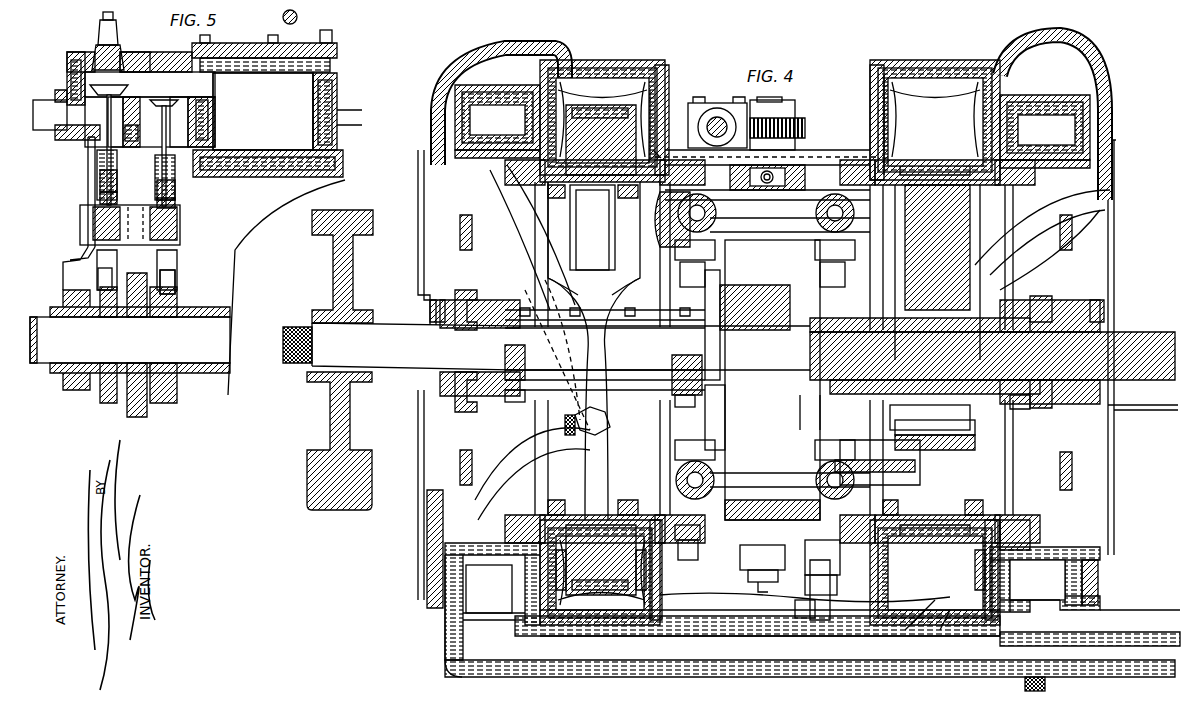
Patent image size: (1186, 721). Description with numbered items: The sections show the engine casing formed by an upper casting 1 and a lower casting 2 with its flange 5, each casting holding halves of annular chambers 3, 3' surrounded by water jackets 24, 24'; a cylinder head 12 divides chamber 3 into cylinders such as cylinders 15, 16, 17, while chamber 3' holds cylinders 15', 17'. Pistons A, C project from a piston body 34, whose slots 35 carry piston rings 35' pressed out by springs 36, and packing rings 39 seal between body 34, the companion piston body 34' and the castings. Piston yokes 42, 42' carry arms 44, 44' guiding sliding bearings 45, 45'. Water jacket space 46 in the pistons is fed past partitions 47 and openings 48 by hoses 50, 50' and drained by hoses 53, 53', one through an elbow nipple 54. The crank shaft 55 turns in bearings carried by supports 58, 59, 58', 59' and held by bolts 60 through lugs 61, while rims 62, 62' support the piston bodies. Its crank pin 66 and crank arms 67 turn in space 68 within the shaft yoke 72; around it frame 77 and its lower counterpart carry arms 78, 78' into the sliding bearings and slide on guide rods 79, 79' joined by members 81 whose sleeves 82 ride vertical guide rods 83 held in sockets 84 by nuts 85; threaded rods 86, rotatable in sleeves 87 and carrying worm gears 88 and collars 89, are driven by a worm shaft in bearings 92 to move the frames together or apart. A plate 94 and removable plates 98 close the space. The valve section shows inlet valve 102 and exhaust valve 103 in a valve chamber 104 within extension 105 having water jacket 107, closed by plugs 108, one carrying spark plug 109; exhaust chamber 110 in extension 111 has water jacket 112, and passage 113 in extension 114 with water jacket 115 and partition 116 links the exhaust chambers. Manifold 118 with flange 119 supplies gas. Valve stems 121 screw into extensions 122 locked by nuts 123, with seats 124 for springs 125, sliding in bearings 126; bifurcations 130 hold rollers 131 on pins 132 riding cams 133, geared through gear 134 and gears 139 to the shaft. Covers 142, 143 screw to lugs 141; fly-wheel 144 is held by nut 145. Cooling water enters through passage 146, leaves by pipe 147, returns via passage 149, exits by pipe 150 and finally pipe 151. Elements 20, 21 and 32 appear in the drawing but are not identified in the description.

In FIG. 5, the upper casting 1 is at (332, 70).
In FIG. 4, the upper casting 1 is at (872, 80).
In FIG. 4, the lower casting 2 is at (1015, 534).
In FIG. 5, the annular chamber 3 is at (263, 111).
In FIG. 4, the annular chamber 3 is at (600, 345).
In FIG. 4, the annular chamber 3' is at (935, 335).
In FIG. 4, the flange 5 is at (939, 630).
In FIG. 5, the cylinder head 12 is at (226, 45).
In FIG. 4, the cylinder 15 is at (602, 110).
In FIG. 4, the cylinder 15' is at (935, 101).
In FIG. 5, the cylinder 16 is at (263, 111).
In FIG. 4, the cylinder 17 is at (770, 603).
In FIG. 4, the cylinder 17' is at (1030, 593).
In FIG. 5, the bolt 20 is at (297, 19).
In FIG. 5, the nut 21 is at (328, 34).
In FIG. 5, the water jacket 24 is at (337, 111).
In FIG. 4, the water jacket 24 is at (668, 342).
In FIG. 4, the water jacket 24' is at (934, 339).
In FIG. 4, the shaft 32 is at (998, 356).
In FIG. 4, the piston body 34 is at (602, 351).
In FIG. 4, the piston body 34' is at (937, 351).
In FIG. 4, the slots 35 is at (762, 346).
In FIG. 4, the piston rings 35' is at (753, 355).
In FIG. 4, the springs 36 is at (661, 117).
In FIG. 4, the packing rings 39 is at (516, 166).
In FIG. 4, the piston yoke 42 is at (594, 351).
In FIG. 4, the piston yoke 42' is at (937, 272).
In FIG. 4, the arms 44 is at (593, 344).
In FIG. 4, the arms 44' is at (933, 512).
In FIG. 4, the sliding bearing 45 is at (592, 227).
In FIG. 4, the sliding bearing 45' is at (935, 435).
In FIG. 5, the water jacket space 46 is at (244, 170).
In FIG. 4, the partitions 47 is at (784, 571).
In FIG. 4, the openings 48 is at (916, 625).
In FIG. 4, the hose 50 is at (532, 237).
In FIG. 4, the hose 50' is at (1042, 232).
In FIG. 4, the hose 53 is at (532, 474).
In FIG. 4, the hose 53' is at (995, 320).
In FIG. 4, the elbow nipple 54 is at (587, 421).
In FIG. 4, the crank shaft 55 is at (561, 346).
In FIG. 4, the bearing support 58 is at (525, 362).
In FIG. 4, the bearing support 58' is at (1026, 404).
In FIG. 4, the bearing support 59 is at (605, 375).
In FIG. 4, the bearing support 59' is at (799, 412).
In FIG. 4, the bolts 60 is at (605, 318).
In FIG. 4, the lugs 61 is at (504, 400).
In FIG. 4, the rims 62 is at (596, 348).
In FIG. 4, the rims 62' is at (941, 348).
In FIG. 4, the crank pin 66 is at (755, 307).
In FIG. 4, the crank arms 67 is at (712, 325).
In FIG. 4, the space 68 is at (714, 417).
In FIG. 4, the shaft yoke 72 is at (772, 380).
In FIG. 4, the frame 77 is at (765, 344).
In FIG. 4, the arm 78 is at (663, 219).
In FIG. 4, the arm 78' is at (877, 462).
In FIG. 4, the horizontal guide rods 79 is at (790, 218).
In FIG. 4, the horizontal guide rods 79' is at (790, 481).
In FIG. 4, the members 81 is at (815, 550).
In FIG. 4, the sleeves 82 is at (765, 350).
In FIG. 4, the vertical guide rods 83 is at (762, 274).
In FIG. 4, the sockets 84 is at (687, 528).
In FIG. 4, the nuts 85 is at (691, 549).
In FIG. 4, the vertical rods 86 is at (770, 586).
In FIG. 4, the sleeves 87 is at (762, 333).
In FIG. 4, the worm gears 88 is at (785, 125).
In FIG. 4, the collars 89 is at (763, 571).
In FIG. 4, the bearings 92 is at (686, 135).
In FIG. 4, the plate 94 is at (805, 588).
In FIG. 4, the removable plates 98 is at (682, 168).
In FIG. 5, the inlet valves 102 is at (109, 138).
In FIG. 5, the exhaust valves 103 is at (182, 98).
In FIG. 5, the valve chamber 104 is at (150, 109).
In FIG. 5, the extensions 105 is at (131, 55).
In FIG. 5, the water jackets 107 is at (66, 75).
In FIG. 5, the threaded plugs 108 is at (90, 56).
In FIG. 5, the spark plug 109 is at (102, 32).
In FIG. 5, the exhaust chamber 110 is at (143, 122).
In FIG. 4, the exhaust chamber 110 is at (770, 359).
In FIG. 4, the extensions 111 is at (772, 369).
In FIG. 5, the water jackets 112 is at (209, 126).
In FIG. 4, the water jackets 112 is at (471, 597).
In FIG. 4, the passage 113 is at (770, 645).
In FIG. 4, the extension 114 is at (450, 649).
In FIG. 4, the water jacket 115 is at (757, 641).
In FIG. 4, the partition 116 is at (850, 646).
In FIG. 5, the gas manifold 118 is at (66, 120).
In FIG. 5, the flanges 119 is at (64, 92).
In FIG. 5, the valve stems 121 is at (108, 114).
In FIG. 5, the extensions 122 is at (107, 257).
In FIG. 5, the lock nuts 123 is at (115, 180).
In FIG. 5, the seats 124 is at (116, 196).
In FIG. 5, the valve springs 125 is at (152, 155).
In FIG. 5, the bearings 126 is at (90, 219).
In FIG. 5, the bifurcations 130 is at (177, 273).
In FIG. 5, the rollers 131 is at (179, 286).
In FIG. 5, the pins 132 is at (95, 270).
In FIG. 4, the cams 133 is at (753, 305).
In FIG. 4, the gear 134 is at (450, 408).
In FIG. 4, the gears 139 is at (768, 301).
In FIG. 4, the lugs 141 is at (1131, 581).
In FIG. 5, the upper cover 142 is at (86, 158).
In FIG. 4, the upper cover 142 is at (415, 166).
In FIG. 4, the lower cover 143 is at (788, 495).
In FIG. 4, the fly-wheel 144 is at (340, 360).
In FIG. 4, the nut 145 is at (297, 336).
In FIG. 4, the passage 146 is at (1035, 678).
In FIG. 4, the pipe 147 is at (1052, 117).
In FIG. 4, the passage 149 is at (796, 607).
In FIG. 4, the pipe 150 is at (501, 106).
In FIG. 4, the pipe 151 is at (428, 573).
In FIG. 4, the piston A is at (772, 140).
In FIG. 4, the piston C is at (771, 560).